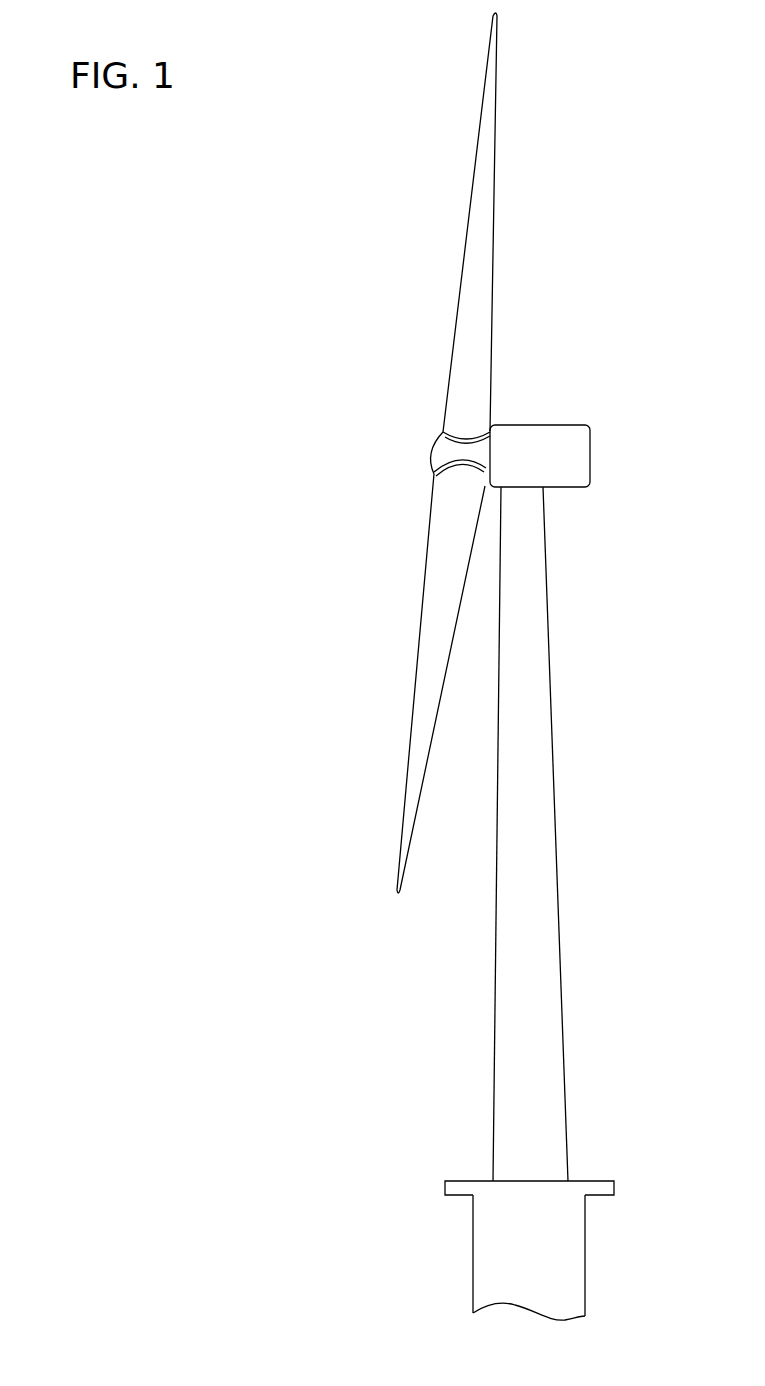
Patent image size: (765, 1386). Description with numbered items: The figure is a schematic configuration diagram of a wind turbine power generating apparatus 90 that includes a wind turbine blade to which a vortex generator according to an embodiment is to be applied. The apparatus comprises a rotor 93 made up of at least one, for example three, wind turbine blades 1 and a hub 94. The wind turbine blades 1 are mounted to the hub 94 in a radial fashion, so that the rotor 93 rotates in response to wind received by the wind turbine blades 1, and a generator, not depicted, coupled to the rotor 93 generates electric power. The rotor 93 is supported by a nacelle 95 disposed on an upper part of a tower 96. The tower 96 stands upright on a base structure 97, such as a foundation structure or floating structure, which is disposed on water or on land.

The wind turbine blade 1 is at (474, 162).
The wind turbine power generating apparatus 90 is at (655, 130).
The rotor 93 is at (372, 416).
The hub 94 is at (432, 452).
The nacelle 95 is at (590, 453).
The tower 96 is at (555, 832).
The base structure 97 is at (585, 1258).